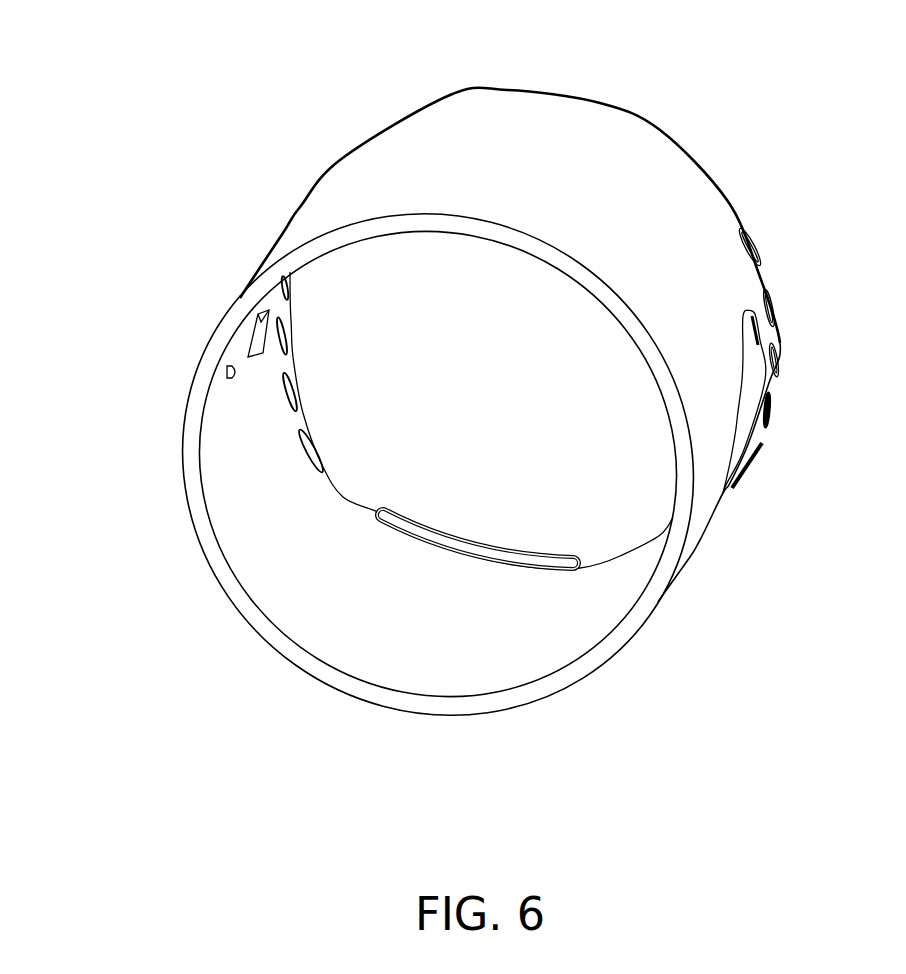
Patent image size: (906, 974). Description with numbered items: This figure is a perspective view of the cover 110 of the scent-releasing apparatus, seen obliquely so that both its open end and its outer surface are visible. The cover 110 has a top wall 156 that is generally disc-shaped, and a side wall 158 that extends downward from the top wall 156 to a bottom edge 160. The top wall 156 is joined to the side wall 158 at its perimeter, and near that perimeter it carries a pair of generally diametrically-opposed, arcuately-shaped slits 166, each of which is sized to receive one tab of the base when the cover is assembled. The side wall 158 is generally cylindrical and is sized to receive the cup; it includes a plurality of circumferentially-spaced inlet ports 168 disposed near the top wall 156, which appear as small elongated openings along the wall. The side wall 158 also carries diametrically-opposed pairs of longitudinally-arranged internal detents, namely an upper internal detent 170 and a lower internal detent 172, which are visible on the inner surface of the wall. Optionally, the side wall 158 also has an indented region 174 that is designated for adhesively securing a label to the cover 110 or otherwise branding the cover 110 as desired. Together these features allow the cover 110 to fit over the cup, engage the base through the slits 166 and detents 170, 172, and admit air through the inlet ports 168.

The cover 110 is at (272, 80).
The top wall 156 is at (367, 313).
The side wall 158 is at (623, 160).
The bottom edge 160 is at (598, 654).
The slit 166 is at (418, 548).
The inlet port 168 is at (742, 236).
The upper internal detent 170 is at (257, 333).
The lower internal detent 172 is at (227, 372).
The indented region 174 is at (753, 385).